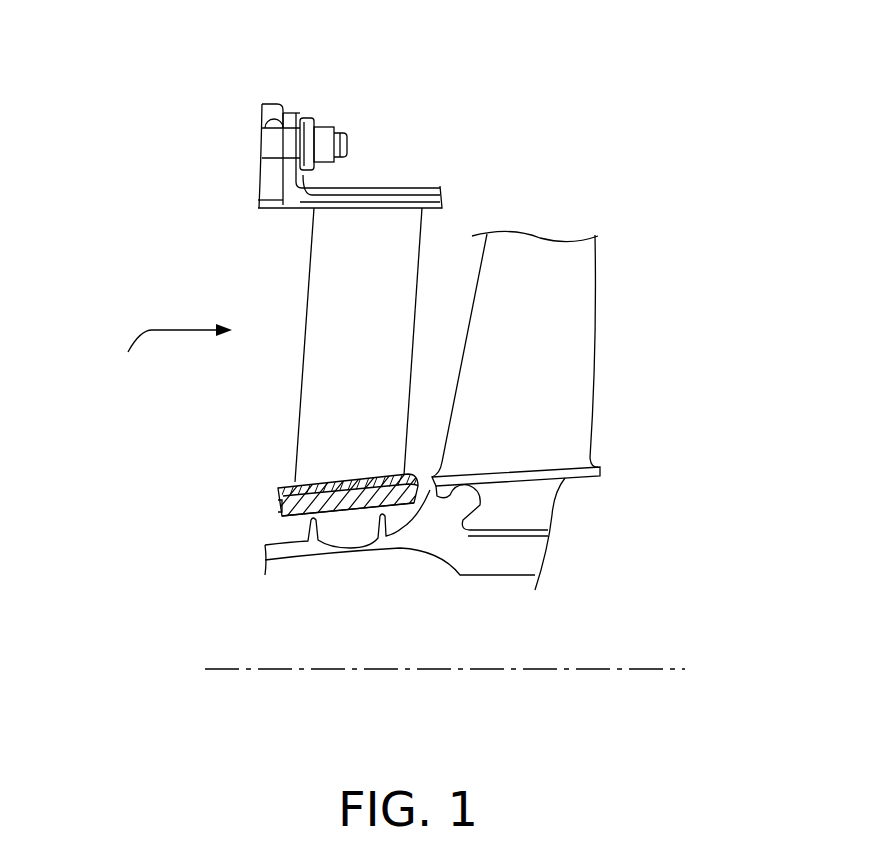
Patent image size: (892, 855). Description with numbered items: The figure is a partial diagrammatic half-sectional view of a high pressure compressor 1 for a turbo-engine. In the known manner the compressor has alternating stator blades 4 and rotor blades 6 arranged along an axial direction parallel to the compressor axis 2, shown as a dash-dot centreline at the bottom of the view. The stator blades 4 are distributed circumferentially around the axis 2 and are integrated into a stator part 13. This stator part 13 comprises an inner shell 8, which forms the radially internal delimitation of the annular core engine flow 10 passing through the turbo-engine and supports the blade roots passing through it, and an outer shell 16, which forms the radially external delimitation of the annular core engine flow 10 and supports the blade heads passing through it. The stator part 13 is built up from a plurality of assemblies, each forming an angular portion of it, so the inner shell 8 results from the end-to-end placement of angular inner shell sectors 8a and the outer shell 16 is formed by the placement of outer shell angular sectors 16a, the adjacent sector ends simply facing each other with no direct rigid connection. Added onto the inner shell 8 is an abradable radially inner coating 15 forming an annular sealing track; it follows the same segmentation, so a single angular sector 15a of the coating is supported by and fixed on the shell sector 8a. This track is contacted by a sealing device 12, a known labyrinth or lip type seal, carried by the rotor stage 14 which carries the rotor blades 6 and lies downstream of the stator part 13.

The high pressure compressor 1 is at (412, 108).
The compressor axis 2 is at (430, 668).
The stator blades 4 is at (320, 312).
The rotor blades 6 is at (590, 297).
The inner shell 8 is at (289, 460).
The angular inner shell sector 8a is at (276, 480).
The annular core engine flow 10 is at (165, 354).
The sealing device 12 is at (318, 545).
The stator part 13 is at (166, 250).
The rotor stage 14 is at (574, 525).
The abradable radially inner coating 15 is at (276, 536).
The angular sector of the abradable coating 15a is at (290, 521).
The outer shell 16 is at (426, 156).
The outer shell angular sector 16a is at (541, 149).